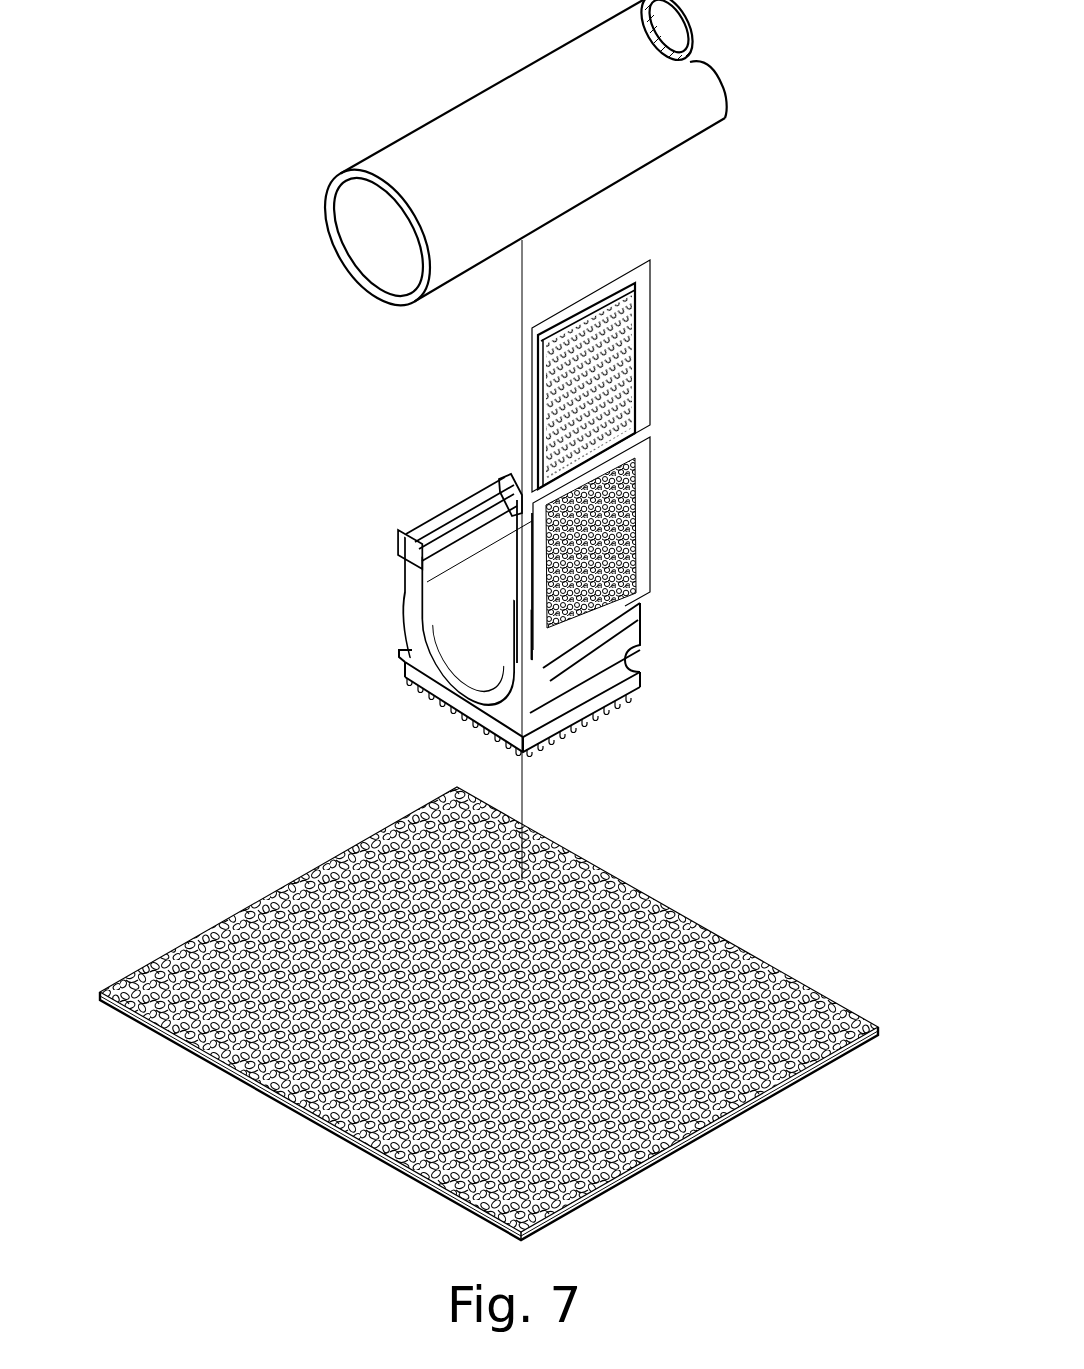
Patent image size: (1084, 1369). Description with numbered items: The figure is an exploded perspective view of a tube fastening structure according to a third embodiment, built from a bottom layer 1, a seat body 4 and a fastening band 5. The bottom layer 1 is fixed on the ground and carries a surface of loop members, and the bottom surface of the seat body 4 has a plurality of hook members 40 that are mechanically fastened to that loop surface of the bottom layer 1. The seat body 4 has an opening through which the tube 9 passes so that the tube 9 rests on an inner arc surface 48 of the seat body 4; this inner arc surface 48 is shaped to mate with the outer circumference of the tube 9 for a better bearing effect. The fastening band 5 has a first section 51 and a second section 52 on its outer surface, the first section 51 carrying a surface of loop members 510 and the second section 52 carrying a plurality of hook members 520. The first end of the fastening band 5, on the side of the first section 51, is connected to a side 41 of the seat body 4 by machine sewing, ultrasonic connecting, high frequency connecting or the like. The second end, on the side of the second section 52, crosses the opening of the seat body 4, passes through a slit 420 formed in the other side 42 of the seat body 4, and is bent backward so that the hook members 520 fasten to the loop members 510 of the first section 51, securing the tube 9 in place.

The tube 9 is at (407, 160).
The fastening band 5 is at (685, 454).
The second section 52 is at (652, 318).
The hook members 520 is at (613, 395).
The first section 51 is at (652, 535).
The loop members 510 is at (646, 539).
The seat body 4 is at (496, 625).
The other side 42 is at (400, 563).
The slit 420 is at (447, 530).
The inner arc surface 48 is at (470, 667).
The hook members 40 is at (437, 710).
The side 41 is at (582, 662).
The bottom layer 1 is at (240, 905).